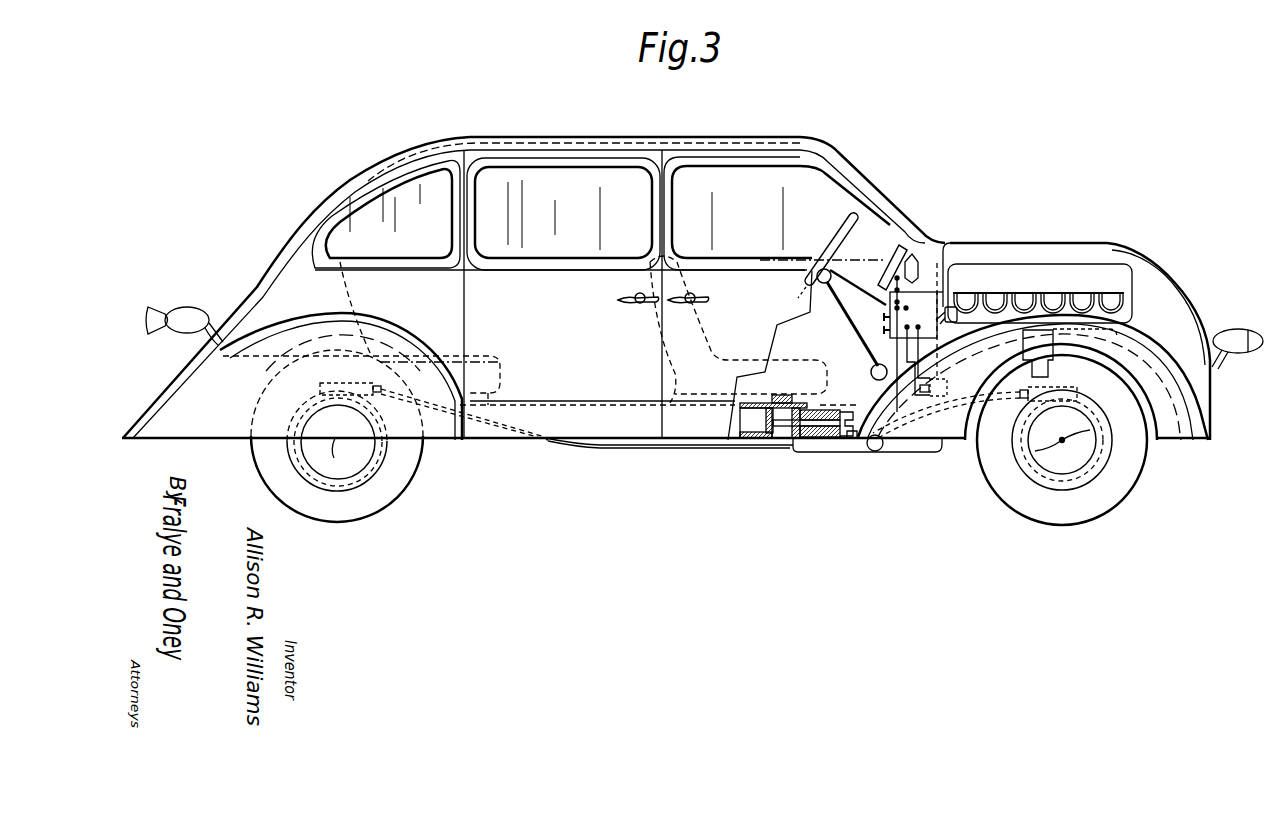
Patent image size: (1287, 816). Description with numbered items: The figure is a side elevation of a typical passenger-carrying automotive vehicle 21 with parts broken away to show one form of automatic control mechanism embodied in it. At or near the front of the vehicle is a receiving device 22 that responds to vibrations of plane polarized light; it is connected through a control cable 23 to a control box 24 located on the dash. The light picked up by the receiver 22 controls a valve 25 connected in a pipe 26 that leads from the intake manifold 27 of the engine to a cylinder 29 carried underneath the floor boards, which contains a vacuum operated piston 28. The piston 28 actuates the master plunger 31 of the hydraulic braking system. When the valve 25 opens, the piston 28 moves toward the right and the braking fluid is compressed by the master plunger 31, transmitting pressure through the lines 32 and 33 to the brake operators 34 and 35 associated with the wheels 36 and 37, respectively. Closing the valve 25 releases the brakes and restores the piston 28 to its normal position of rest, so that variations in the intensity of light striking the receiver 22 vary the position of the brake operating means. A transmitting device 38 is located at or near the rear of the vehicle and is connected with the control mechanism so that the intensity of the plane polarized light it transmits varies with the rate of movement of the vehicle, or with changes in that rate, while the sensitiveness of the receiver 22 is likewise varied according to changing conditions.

The automotive vehicle 21 is at (565, 136).
The receiving device 22 is at (1243, 330).
The control cable 23 is at (1106, 244).
The control box 24 is at (912, 302).
The valve 25 is at (939, 398).
The pipe 26 is at (948, 315).
The intake manifold 27 is at (1022, 305).
The vacuum operated piston 28 is at (768, 430).
The cylinder 29 is at (786, 430).
The master plunger 31 is at (815, 432).
The line 32 is at (880, 450).
The line 33 is at (590, 462).
The brake operator 34 is at (1043, 394).
The brake operator 35 is at (337, 390).
The wheel 36 is at (1123, 462).
The wheel 37 is at (380, 473).
The transmitting device 38 is at (171, 320).